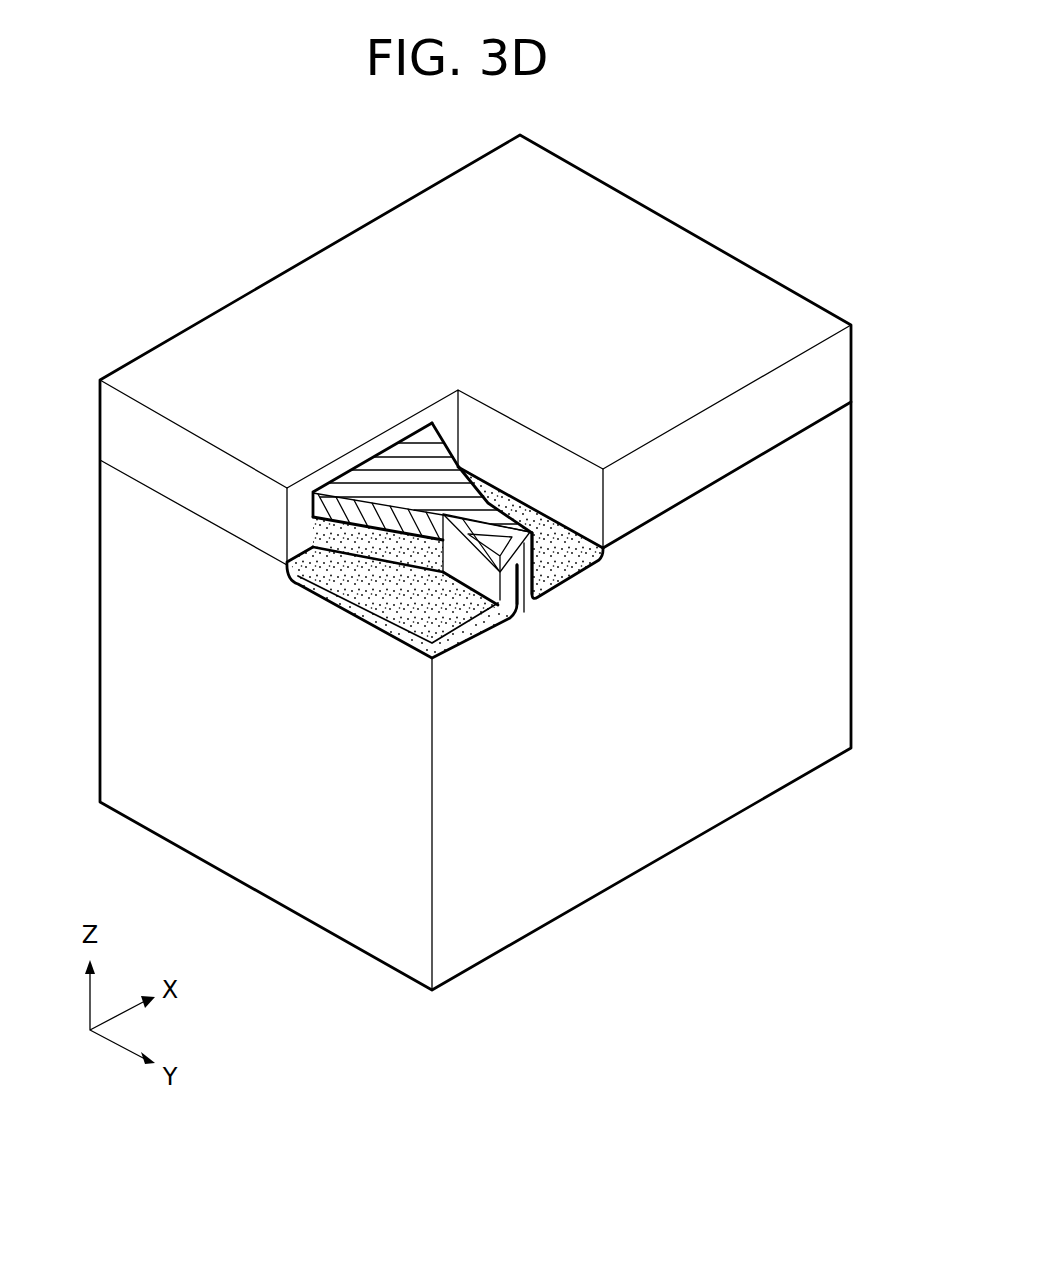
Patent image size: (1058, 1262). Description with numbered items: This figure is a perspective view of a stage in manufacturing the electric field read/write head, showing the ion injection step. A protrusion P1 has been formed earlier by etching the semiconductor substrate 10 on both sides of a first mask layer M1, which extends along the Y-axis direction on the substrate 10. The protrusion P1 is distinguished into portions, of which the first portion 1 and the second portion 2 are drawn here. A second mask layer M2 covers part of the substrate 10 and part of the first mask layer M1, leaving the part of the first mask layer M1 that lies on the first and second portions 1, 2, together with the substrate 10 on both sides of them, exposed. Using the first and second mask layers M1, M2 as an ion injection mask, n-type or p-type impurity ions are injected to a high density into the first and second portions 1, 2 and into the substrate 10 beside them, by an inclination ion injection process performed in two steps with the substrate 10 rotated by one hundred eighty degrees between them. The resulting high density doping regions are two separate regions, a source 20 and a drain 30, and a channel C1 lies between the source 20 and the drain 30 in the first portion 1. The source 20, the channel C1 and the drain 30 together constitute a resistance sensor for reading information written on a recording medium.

The semiconductor substrate 10 is at (838, 575).
The source 20 is at (457, 633).
The drain 30 is at (570, 573).
The first mask layer M1 is at (353, 508).
The second mask layer M2 is at (838, 377).
The protrusion P1 is at (411, 552).
The channel C1 is at (513, 590).
The first portion 1 is at (486, 557).
The second portion 2 is at (378, 544).